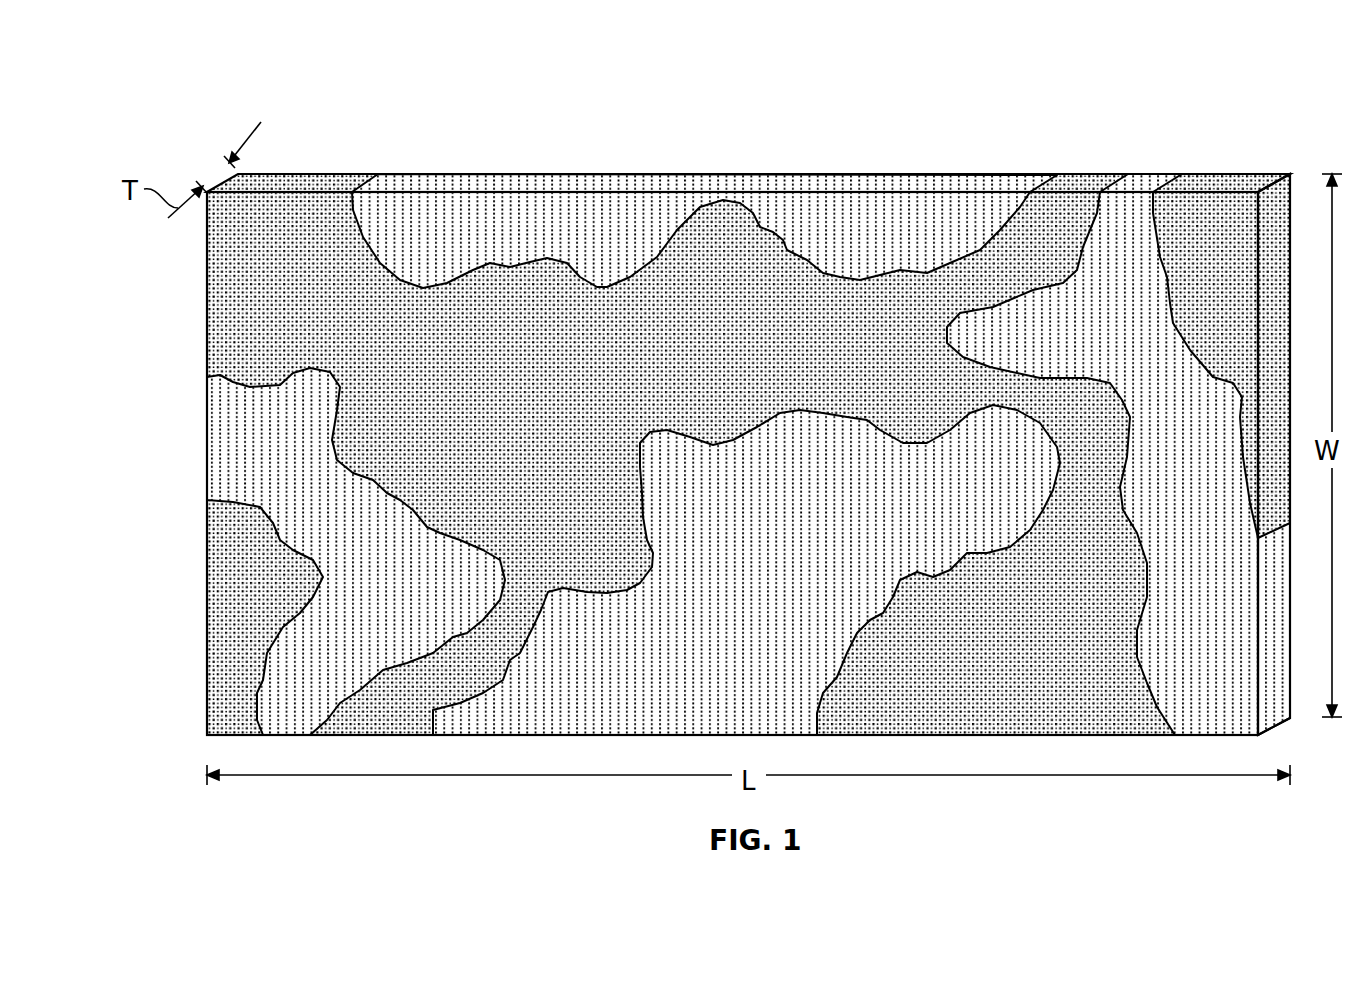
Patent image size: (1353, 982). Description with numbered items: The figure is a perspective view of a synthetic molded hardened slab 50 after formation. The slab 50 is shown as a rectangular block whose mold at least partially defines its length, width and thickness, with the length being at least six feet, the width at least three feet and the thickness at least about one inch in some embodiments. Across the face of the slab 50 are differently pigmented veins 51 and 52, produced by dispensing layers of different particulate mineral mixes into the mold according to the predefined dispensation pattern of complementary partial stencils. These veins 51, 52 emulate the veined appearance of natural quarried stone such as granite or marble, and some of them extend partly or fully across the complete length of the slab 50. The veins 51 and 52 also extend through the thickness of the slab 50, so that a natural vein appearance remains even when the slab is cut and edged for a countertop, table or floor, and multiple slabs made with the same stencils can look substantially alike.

The hardened slab 50 is at (329, 80).
The vein 51 is at (1240, 184).
The vein 52 is at (903, 186).